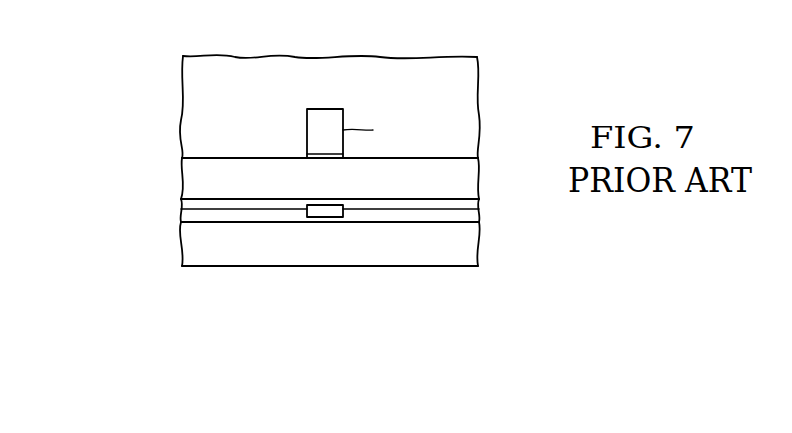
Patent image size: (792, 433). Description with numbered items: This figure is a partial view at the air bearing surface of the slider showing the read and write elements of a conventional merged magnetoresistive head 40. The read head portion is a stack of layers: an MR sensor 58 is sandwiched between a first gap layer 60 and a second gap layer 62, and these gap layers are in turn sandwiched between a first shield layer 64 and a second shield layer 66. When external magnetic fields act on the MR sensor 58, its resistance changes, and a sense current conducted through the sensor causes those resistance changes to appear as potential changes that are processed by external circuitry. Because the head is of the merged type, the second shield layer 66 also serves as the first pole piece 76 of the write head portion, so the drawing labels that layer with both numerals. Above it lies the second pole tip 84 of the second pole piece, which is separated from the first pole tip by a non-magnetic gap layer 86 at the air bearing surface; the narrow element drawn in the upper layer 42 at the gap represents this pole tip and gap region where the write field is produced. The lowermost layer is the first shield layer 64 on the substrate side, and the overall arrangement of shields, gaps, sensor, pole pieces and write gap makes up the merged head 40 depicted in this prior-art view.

The merged magnetoresistive head 40 is at (341, 160).
The upper layer 42 is at (190, 80).
The MR sensor 58 is at (327, 217).
The first gap layer 60 is at (210, 222).
The second gap layer 62 is at (330, 257).
The first shield layer 64 is at (368, 269).
The second shield layer 66 is at (269, 178).
The first pole piece 76 is at (190, 175).
The second pole tip 84 is at (348, 81).
The non-magnetic gap layer 86 is at (318, 153).